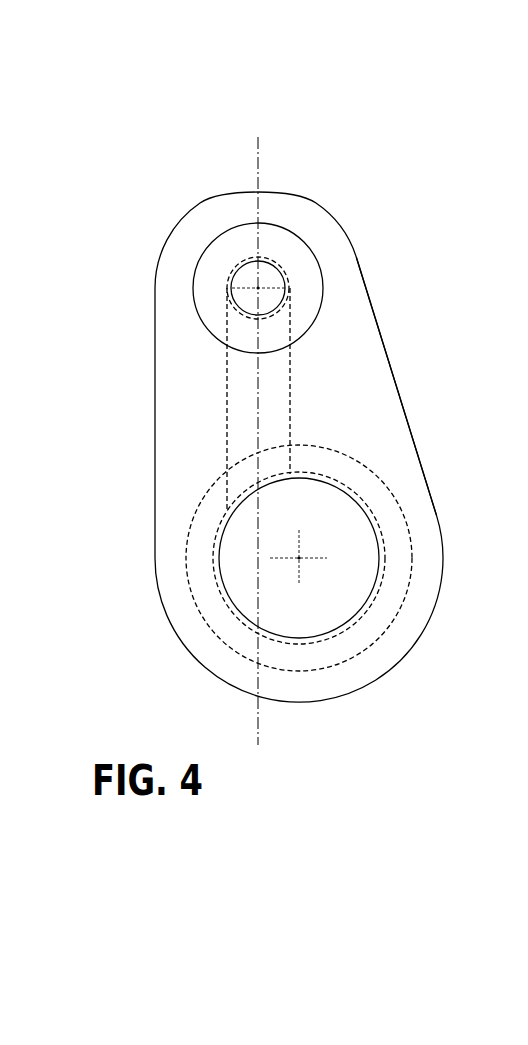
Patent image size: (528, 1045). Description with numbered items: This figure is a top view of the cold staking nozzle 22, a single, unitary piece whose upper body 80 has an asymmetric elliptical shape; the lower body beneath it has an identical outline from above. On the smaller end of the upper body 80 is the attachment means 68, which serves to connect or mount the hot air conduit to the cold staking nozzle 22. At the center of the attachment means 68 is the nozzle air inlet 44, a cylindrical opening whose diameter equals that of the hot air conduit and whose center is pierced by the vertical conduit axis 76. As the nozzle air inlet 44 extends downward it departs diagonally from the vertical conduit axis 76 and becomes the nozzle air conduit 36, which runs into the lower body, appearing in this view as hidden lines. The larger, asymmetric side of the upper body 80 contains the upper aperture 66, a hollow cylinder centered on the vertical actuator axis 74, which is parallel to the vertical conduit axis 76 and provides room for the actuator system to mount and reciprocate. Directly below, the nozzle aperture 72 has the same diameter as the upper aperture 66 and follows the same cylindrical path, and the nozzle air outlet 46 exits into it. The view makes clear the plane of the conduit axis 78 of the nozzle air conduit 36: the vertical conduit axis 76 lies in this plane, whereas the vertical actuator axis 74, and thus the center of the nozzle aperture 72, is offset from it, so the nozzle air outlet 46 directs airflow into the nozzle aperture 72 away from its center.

The cold staking nozzle 22 is at (153, 177).
The plane of the conduit axis 78 is at (257, 181).
The vertical conduit axis 76 is at (259, 287).
The nozzle air inlet 44 is at (230, 278).
The attachment means 68 is at (323, 284).
The upper body 80 is at (396, 380).
The nozzle air conduit 36 is at (226, 384).
The nozzle air outlet 46 is at (247, 493).
The upper aperture 66 is at (365, 505).
The nozzle aperture 72 is at (312, 626).
The vertical actuator axis 74 is at (300, 560).